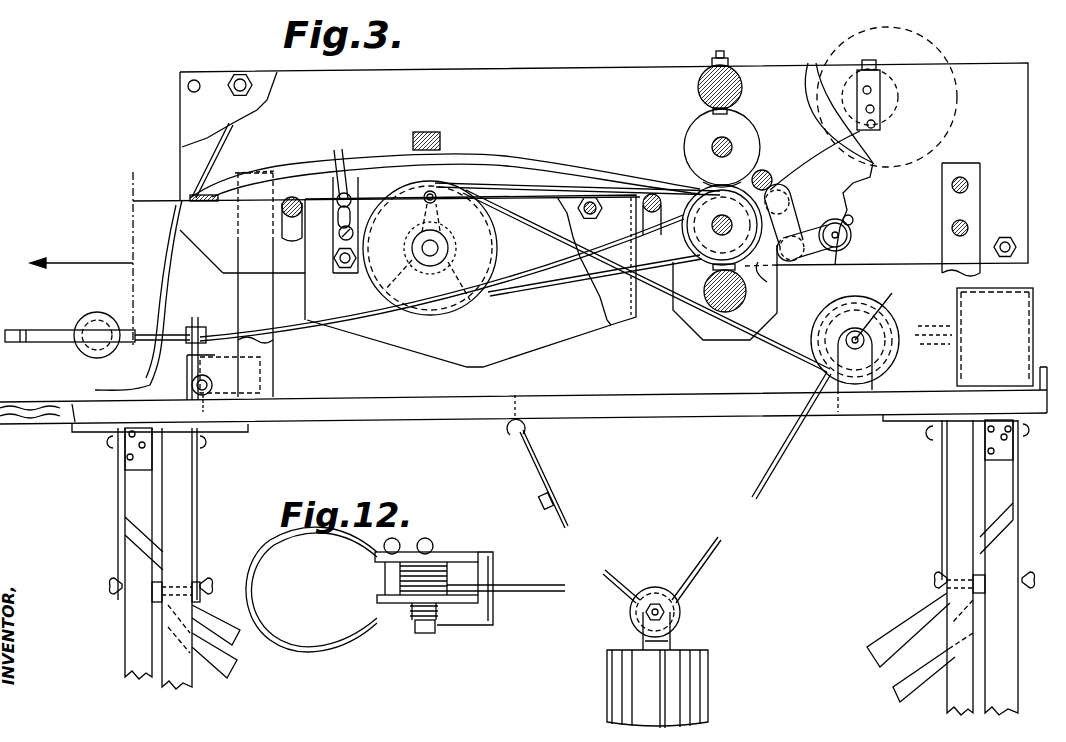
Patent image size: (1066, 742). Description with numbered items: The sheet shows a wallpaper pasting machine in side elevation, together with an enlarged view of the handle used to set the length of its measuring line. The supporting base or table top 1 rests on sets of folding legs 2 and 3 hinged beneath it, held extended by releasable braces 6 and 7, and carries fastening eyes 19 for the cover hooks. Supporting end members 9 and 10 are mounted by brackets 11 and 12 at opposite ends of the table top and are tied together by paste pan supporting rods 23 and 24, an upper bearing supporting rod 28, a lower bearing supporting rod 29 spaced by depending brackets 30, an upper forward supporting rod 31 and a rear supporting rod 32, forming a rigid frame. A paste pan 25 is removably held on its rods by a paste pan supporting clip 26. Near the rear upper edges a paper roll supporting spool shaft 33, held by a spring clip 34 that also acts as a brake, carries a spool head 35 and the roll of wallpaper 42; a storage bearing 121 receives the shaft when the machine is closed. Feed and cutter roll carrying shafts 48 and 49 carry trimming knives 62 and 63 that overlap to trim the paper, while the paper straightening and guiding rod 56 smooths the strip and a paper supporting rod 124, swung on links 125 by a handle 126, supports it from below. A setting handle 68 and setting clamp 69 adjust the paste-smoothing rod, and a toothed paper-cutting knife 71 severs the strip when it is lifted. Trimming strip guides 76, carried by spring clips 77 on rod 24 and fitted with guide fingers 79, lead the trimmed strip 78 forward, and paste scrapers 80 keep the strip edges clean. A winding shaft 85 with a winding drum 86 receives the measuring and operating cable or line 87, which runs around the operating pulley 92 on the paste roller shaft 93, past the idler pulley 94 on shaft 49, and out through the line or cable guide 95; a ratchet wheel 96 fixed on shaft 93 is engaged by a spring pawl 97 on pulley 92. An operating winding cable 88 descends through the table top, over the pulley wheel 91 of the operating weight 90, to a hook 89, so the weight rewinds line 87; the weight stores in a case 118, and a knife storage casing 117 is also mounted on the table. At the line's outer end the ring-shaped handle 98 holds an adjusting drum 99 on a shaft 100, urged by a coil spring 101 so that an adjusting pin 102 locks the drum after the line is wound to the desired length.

In FIG. 3, the supporting base or table top 1 is at (405, 399).
In FIG. 3, the folding legs 2 is at (185, 522).
In FIG. 3, the folding legs 3 is at (130, 560).
In FIG. 3, the releasable brace 6 is at (197, 487).
In FIG. 3, the releasable brace 7 is at (120, 490).
In FIG. 3, the supporting end member 9 is at (529, 204).
In FIG. 3, the supporting end member 10 is at (243, 109).
In FIG. 3, the bracket 11 is at (265, 360).
In FIG. 3, the bracket 12 is at (255, 285).
In FIG. 3, the fastening eyes 19 is at (1041, 376).
In FIG. 3, the paste pan supporting rod 23 is at (276, 208).
In FIG. 3, the paste pan supporting rod 24 is at (652, 193).
In FIG. 3, the paste pan 25 is at (470, 281).
In FIG. 3, the paste pan supporting clip 26 is at (290, 242).
In FIG. 3, the upper bearing supporting rod 28 is at (743, 87).
In FIG. 3, the lower bearing supporting rod 29 is at (748, 301).
In FIG. 3, the depending brackets 30 is at (698, 326).
In FIG. 3, the upper forward supporting rod 31 is at (238, 73).
In FIG. 3, the rear supporting rod 32 is at (1005, 236).
In FIG. 3, the paper roll supporting spool shaft 33 is at (881, 89).
In FIG. 3, the spring clip 34 is at (881, 110).
In FIG. 3, the spool head 35 is at (887, 97).
In FIG. 3, the roll of wallpaper 42 is at (822, 62).
In FIG. 3, the feed and cutter roll carrying shaft 48 is at (733, 141).
In FIG. 3, the feed and cutter roll carrying shaft 49 is at (705, 233).
In FIG. 3, the paper straightening and guiding rod 56 is at (771, 175).
In FIG. 3, the trimming knives 62 is at (685, 138).
In FIG. 3, the trimming knives 63 is at (740, 180).
In FIG. 3, the setting handle 68 is at (338, 148).
In FIG. 3, the setting clamp 69 is at (351, 188).
In FIG. 3, the paper-cutting knife 71 is at (206, 203).
In FIG. 3, the trimming strip guides 76 is at (500, 154).
In FIG. 3, the spring clips 77 is at (602, 208).
In FIG. 3, the trimmed strip 78 is at (170, 252).
In FIG. 3, the guide fingers 79 is at (438, 134).
In FIG. 3, the paste scrapers 80 is at (495, 188).
In FIG. 3, the winding shaft 85 is at (849, 331).
In FIG. 3, the winding drum 86 is at (899, 351).
In FIG. 3, the measuring and operating cable or line 87 is at (366, 328).
In FIG. 12, the measuring and operating cable or line 87 is at (540, 585).
In FIG. 3, the operating winding cable 88 is at (776, 468).
In FIG. 3, the hook 89 is at (510, 441).
In FIG. 3, the operating weight 90 is at (708, 662).
In FIG. 3, the pulley wheel 91 is at (685, 614).
In FIG. 3, the operating pulley 92 is at (413, 311).
In FIG. 3, the paste roller shaft 93 is at (440, 248).
In FIG. 3, the idler pulley 94 is at (800, 214).
In FIG. 3, the line or cable guide 95 is at (205, 317).
In FIG. 3, the ratchet wheel 96 is at (369, 279).
In FIG. 3, the spring pawl 97 is at (398, 205).
In FIG. 3, the ring-shaped handle 98 is at (46, 329).
In FIG. 12, the ring-shaped handle 98 is at (334, 645).
In FIG. 3, the adjusting drum 99 is at (95, 312).
In FIG. 12, the adjusting drum 99 is at (478, 552).
In FIG. 12, the shaft 100 is at (436, 632).
In FIG. 12, the coil spring 101 is at (414, 622).
In FIG. 12, the adjusting pin 102 is at (398, 540).
In FIG. 3, the knife storage casing 117 is at (187, 372).
In FIG. 3, the case 118 is at (957, 301).
In FIG. 3, the storage bearing 121 is at (852, 220).
In FIG. 3, the paper supporting rod 124 is at (790, 192).
In FIG. 3, the links 125 is at (853, 216).
In FIG. 3, the handle 126 is at (852, 237).